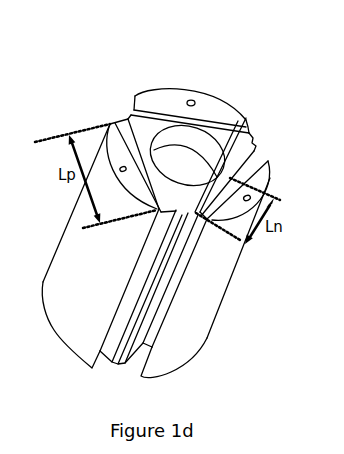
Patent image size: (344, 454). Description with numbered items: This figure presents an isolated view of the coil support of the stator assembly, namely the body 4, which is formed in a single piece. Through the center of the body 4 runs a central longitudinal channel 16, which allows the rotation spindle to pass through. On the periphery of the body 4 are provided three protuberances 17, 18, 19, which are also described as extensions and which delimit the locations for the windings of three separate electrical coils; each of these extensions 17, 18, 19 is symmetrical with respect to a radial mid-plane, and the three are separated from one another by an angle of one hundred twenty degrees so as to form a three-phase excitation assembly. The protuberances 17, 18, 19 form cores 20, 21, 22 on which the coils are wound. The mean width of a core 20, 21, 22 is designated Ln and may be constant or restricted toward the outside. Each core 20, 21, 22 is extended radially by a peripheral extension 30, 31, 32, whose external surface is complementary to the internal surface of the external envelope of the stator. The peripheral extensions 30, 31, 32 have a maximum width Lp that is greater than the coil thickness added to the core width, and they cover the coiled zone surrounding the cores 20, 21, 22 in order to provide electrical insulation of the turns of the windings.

The body 4 is at (112, 98).
The central longitudinal channel 16 is at (198, 160).
The protuberance 17 is at (47, 217).
The protuberance 18 is at (257, 266).
The protuberance 19 is at (202, 60).
The core 20 is at (130, 146).
The core 21 is at (253, 150).
The core 22 is at (151, 111).
The peripheral extension 30 is at (82, 330).
The peripheral extension 31 is at (213, 277).
The peripheral extension 32 is at (209, 111).